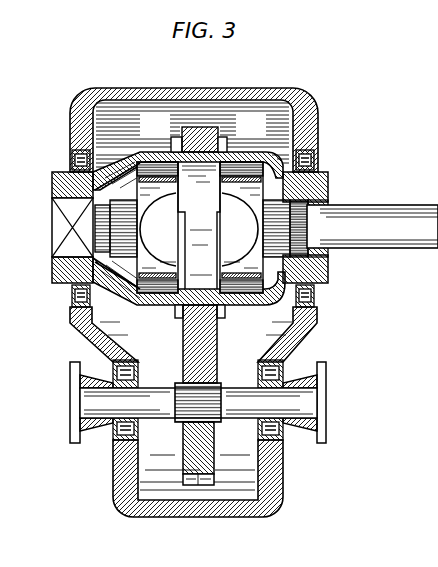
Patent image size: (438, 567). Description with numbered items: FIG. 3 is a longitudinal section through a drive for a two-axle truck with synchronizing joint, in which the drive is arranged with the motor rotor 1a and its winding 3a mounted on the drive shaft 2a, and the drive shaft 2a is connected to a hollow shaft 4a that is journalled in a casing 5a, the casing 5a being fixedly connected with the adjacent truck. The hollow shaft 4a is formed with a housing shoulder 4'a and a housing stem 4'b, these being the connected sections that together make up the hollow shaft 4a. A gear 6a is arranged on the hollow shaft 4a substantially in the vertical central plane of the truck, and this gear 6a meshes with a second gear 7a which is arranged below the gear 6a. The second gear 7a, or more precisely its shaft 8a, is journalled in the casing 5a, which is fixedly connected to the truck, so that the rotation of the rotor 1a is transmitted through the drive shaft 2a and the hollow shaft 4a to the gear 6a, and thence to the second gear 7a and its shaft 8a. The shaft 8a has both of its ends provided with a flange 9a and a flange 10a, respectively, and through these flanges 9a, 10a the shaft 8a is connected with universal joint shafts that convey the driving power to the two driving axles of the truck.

The rotor 1a is at (250, 274).
The drive shaft 2a is at (400, 214).
The winding 3a is at (58, 236).
The hollow shaft 4a is at (113, 158).
The housing shoulder 4'a is at (162, 135).
The housing stem 4'b is at (221, 136).
The casing 5a is at (299, 91).
The gear 6a is at (176, 308).
The second gear 7a is at (200, 476).
The shaft 8a is at (237, 409).
The flange 9a is at (72, 426).
The flange 10a is at (326, 376).